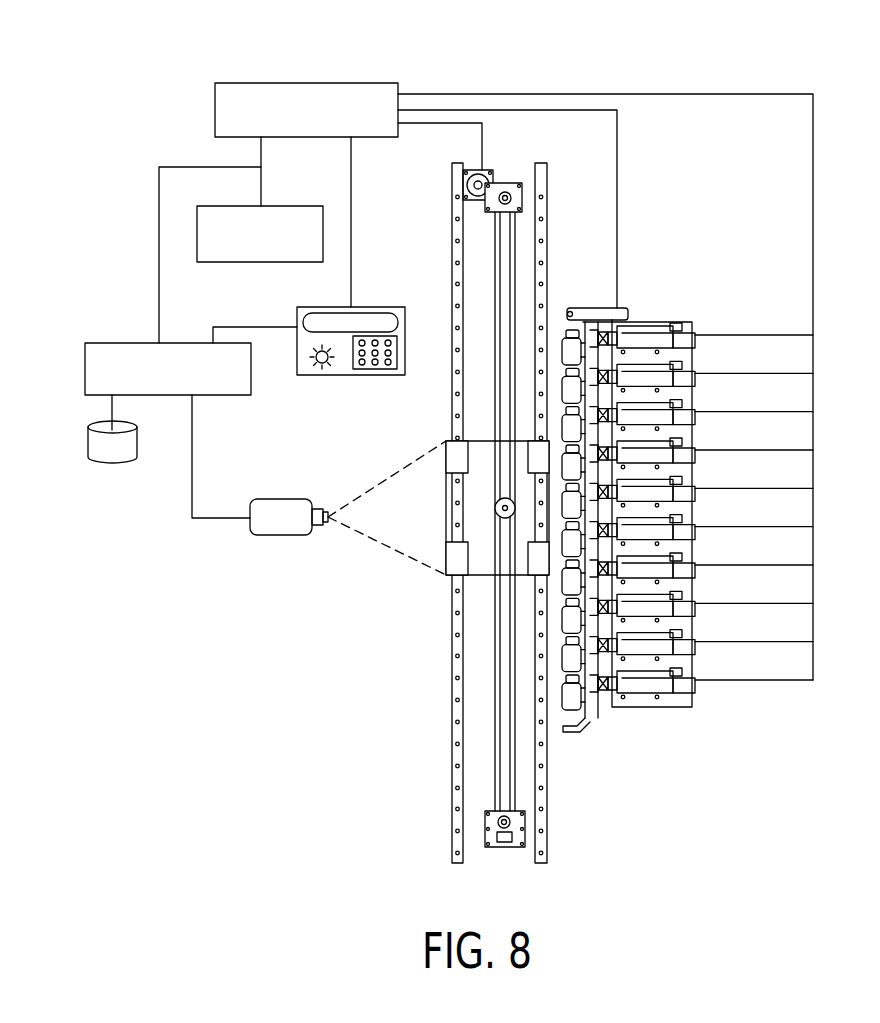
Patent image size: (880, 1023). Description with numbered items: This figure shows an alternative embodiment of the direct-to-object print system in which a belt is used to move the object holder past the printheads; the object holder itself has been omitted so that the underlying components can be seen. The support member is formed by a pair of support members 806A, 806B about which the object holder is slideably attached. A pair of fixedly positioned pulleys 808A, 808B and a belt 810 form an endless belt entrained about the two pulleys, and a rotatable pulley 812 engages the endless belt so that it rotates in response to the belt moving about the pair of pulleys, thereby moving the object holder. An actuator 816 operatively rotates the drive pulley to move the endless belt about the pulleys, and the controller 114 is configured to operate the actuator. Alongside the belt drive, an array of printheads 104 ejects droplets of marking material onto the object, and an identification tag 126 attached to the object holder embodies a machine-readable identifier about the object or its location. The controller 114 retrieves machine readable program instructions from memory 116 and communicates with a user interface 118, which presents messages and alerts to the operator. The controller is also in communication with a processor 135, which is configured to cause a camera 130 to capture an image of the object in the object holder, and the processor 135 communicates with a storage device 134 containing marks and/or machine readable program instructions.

The controller 114 is at (312, 83).
The memory 116 is at (281, 206).
The processor 135 is at (128, 342).
The storage device 134 is at (110, 463).
The camera 130 is at (282, 499).
The user interface 118 is at (347, 375).
The identification tag 126 is at (624, 306).
The array of printheads 104 is at (688, 320).
The support member 806A is at (452, 822).
The support member 806B is at (547, 822).
The fixedly positioned pulley 808A is at (502, 215).
The fixedly positioned pulley 808B is at (497, 812).
The belt 810 is at (513, 263).
The rotatable pulley 812 is at (495, 508).
The actuator 816 is at (488, 170).